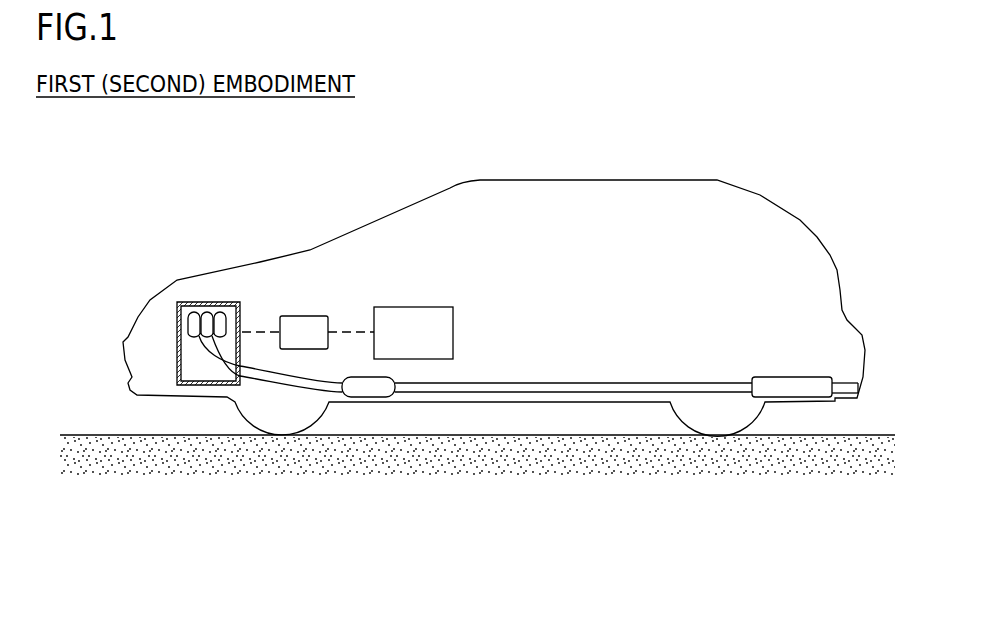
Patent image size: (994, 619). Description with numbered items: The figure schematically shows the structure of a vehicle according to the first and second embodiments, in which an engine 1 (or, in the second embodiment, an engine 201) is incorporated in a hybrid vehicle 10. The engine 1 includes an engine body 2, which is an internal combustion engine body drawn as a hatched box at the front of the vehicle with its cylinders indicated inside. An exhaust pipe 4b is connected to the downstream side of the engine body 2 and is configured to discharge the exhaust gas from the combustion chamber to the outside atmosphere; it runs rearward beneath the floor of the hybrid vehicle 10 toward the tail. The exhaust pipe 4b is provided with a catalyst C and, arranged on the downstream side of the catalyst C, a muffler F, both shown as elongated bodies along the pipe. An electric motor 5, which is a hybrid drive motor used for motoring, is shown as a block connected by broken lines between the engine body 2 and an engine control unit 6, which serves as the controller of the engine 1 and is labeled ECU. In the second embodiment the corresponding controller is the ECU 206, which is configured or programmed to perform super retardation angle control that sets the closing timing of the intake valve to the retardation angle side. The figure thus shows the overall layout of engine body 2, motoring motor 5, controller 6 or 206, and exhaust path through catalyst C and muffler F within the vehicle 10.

The hybrid vehicle 10 is at (168, 197).
The engine 1 is at (191, 292).
The engine 201 is at (192, 309).
The engine body 2 is at (228, 301).
The exhaust pipe 4b is at (255, 378).
The electric motor 5 is at (313, 315).
The engine control unit (ECU) 6 is at (428, 306).
The ECU 206 is at (421, 311).
The catalyst C is at (373, 390).
The muffler F is at (803, 390).